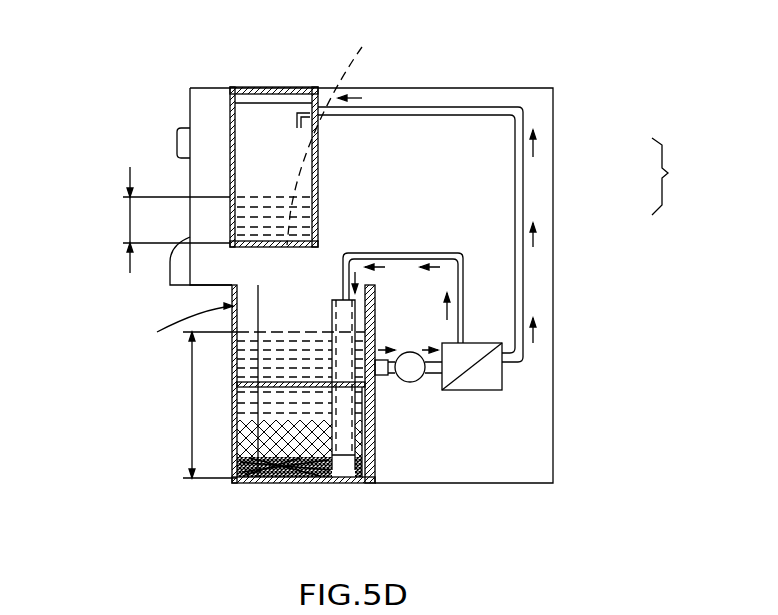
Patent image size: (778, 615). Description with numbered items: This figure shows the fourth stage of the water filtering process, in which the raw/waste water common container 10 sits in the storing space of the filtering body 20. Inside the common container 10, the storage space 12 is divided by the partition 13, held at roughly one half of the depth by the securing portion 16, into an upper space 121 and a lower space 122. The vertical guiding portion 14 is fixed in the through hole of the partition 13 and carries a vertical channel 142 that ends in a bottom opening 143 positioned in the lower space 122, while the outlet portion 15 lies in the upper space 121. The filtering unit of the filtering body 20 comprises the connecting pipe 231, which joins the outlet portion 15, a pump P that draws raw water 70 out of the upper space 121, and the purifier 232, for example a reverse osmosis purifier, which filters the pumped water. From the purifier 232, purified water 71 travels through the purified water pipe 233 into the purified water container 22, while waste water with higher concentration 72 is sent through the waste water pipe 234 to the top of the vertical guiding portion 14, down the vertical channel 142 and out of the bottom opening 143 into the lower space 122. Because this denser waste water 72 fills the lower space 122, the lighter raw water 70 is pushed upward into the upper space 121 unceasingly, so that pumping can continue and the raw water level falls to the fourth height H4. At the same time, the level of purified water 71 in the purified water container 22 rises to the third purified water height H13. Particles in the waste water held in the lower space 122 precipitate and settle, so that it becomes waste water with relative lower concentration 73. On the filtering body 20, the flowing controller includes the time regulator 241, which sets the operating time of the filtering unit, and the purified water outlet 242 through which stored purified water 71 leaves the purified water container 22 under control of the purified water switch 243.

The raw/waste water common container 10 is at (195, 317).
The storage space 12 is at (414, 350).
The upper space 121 is at (441, 261).
The lower space 122 is at (441, 297).
The partition 13 is at (434, 371).
The vertical guiding portion 14 is at (304, 470).
The vertical channel 142 is at (504, 272).
The bottom opening 143 is at (353, 485).
The outlet portion 15 is at (372, 392).
The securing portion 16 is at (372, 467).
The filtering body 20 is at (553, 432).
The purified water container 22 is at (248, 128).
The connecting pipe 231 is at (451, 451).
The purifier 232 is at (555, 366).
The purified water pipe 233 is at (430, 107).
The waste water pipe 234 is at (462, 317).
The time regulator 241 is at (177, 142).
The purified water outlet 242 is at (175, 290).
The purified water switch 243 is at (177, 270).
The raw water 70 is at (332, 132).
The purified water 71 is at (275, 198).
The waste water with higher concentration 72 is at (268, 470).
The waste water with relative lower concentration 73 is at (233, 468).
The third purified water height H13 is at (152, 220).
The fourth height H4 is at (193, 405).